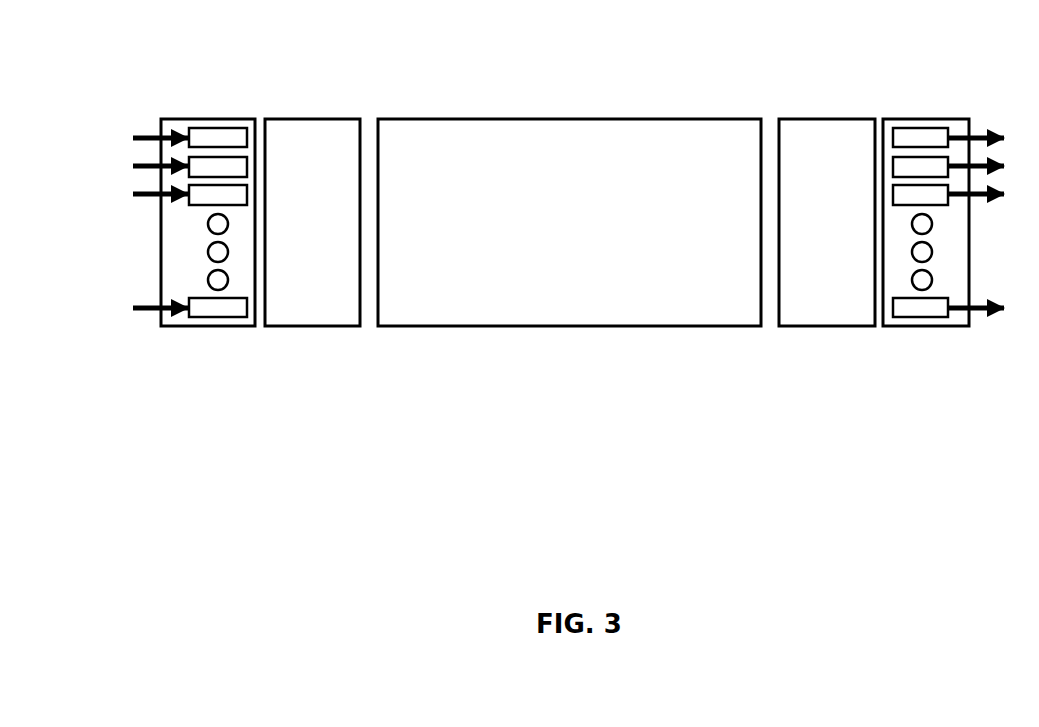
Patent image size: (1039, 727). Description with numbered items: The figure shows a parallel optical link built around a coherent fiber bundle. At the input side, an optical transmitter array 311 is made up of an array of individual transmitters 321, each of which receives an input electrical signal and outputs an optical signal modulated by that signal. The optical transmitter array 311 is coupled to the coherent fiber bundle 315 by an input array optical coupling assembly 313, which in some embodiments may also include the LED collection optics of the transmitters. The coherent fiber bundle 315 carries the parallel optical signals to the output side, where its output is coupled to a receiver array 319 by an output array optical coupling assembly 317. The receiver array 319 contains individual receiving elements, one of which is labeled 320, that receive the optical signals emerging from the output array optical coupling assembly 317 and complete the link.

The optical transmitter array 311 is at (207, 118).
The input array optical coupling assembly 313 is at (319, 118).
The coherent fiber bundle 315 is at (552, 118).
The output array optical coupling assembly 317 is at (825, 123).
The receiver array 319 is at (932, 118).
The output port 320 is at (925, 318).
The individual transmitter 321 is at (213, 318).